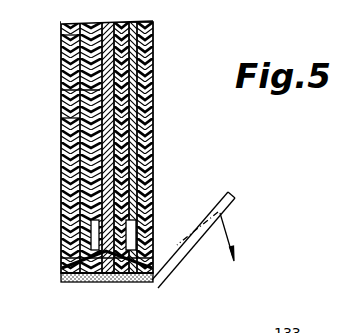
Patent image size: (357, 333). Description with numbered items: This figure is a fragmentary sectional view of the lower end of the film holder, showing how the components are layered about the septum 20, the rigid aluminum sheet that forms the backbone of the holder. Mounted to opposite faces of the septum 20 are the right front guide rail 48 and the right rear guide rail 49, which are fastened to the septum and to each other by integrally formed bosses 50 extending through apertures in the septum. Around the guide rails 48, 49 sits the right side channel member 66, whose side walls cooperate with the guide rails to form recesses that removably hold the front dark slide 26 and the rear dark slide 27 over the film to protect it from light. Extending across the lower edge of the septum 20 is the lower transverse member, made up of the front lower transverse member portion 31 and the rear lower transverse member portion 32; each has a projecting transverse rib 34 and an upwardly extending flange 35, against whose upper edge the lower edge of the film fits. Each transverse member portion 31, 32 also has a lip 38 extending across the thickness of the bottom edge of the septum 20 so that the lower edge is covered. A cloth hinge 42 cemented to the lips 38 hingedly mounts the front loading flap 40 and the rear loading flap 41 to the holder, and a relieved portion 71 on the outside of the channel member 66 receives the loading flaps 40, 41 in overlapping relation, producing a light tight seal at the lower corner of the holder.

The septum 20 is at (148, 98).
The front dark slide 26 is at (153, 35).
The rear dark slide 27 is at (62, 45).
The right side channel member 66 is at (61, 60).
The right rear guide rail 49 is at (65, 90).
The integrally formed bosses 50 is at (61, 118).
The right front guide rail 48 is at (153, 121).
The relieved portion 71 is at (62, 172).
The rear loading flap 41 is at (61, 212).
The flange 35 is at (153, 187).
The front loading flap 40 is at (153, 204).
The rib 34 is at (61, 258).
The cloth hinge 42 is at (98, 272).
The rear lower transverse member portion 32 is at (92, 282).
The lip 38 is at (112, 282).
The front lower transverse member portion 31 is at (140, 283).